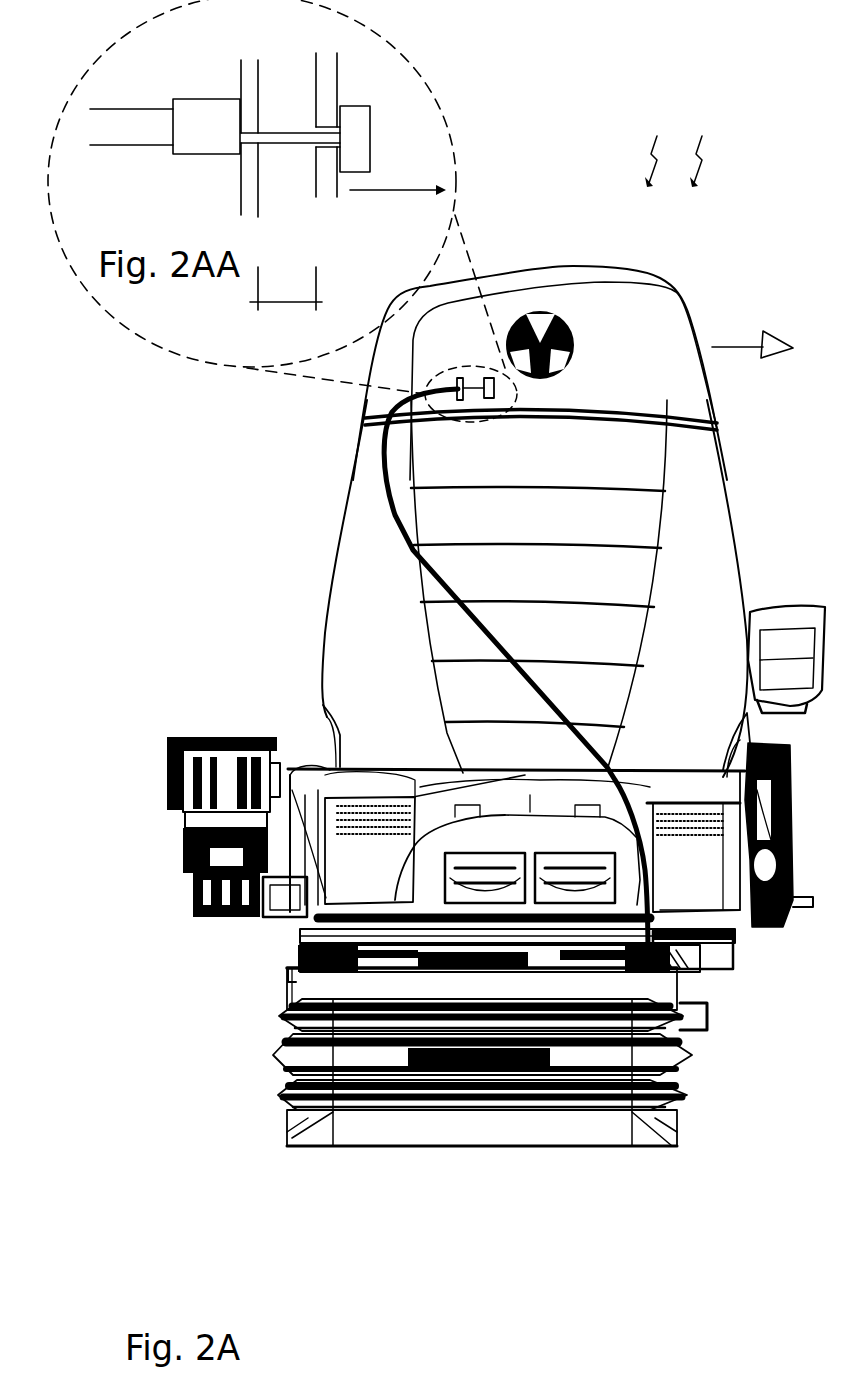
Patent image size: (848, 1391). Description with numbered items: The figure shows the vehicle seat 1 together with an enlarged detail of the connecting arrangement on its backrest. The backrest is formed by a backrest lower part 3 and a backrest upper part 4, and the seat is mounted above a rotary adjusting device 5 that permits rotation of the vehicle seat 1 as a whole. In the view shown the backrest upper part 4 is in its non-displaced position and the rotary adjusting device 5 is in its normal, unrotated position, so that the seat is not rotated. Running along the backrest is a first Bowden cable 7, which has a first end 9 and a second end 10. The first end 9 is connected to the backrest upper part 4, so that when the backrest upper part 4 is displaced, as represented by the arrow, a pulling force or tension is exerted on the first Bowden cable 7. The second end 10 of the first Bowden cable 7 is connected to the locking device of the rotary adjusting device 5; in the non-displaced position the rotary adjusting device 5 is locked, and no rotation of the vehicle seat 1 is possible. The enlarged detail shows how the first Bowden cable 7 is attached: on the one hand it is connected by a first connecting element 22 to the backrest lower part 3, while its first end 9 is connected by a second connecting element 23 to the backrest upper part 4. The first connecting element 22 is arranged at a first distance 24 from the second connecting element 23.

In FIG. 2A, the vehicle seat 1 is at (733, 196).
In FIG. 2A, the backrest lower part 3 is at (370, 507).
In FIG. 2A, the backrest upper part 4 is at (660, 325).
In FIG. 2A, the rotary adjusting device 5 is at (722, 951).
In FIG. 2AA, the first Bowden cable 7 is at (126, 112).
In FIG. 2AA, the first end 9 is at (364, 140).
In FIG. 2A, the second end 10 is at (543, 975).
In FIG. 2AA, the first connecting element 22 is at (241, 196).
In FIG. 2AA, the second connecting element 23 is at (327, 193).
In FIG. 2AA, the first distance 24 is at (287, 304).